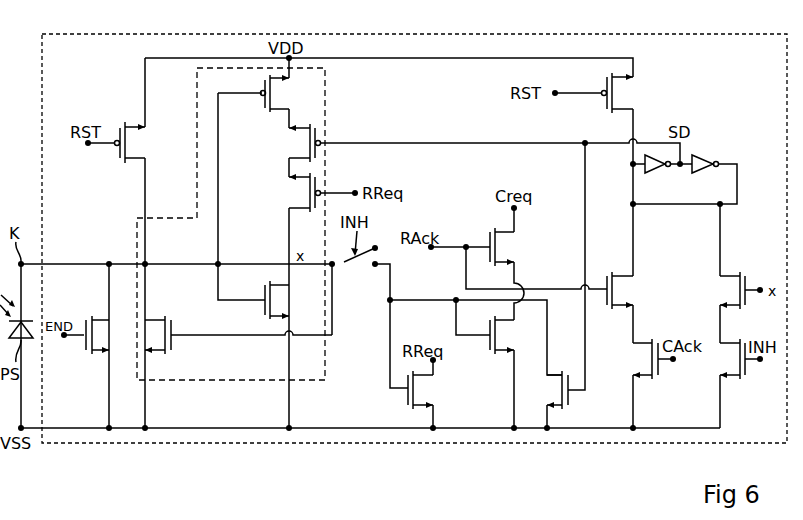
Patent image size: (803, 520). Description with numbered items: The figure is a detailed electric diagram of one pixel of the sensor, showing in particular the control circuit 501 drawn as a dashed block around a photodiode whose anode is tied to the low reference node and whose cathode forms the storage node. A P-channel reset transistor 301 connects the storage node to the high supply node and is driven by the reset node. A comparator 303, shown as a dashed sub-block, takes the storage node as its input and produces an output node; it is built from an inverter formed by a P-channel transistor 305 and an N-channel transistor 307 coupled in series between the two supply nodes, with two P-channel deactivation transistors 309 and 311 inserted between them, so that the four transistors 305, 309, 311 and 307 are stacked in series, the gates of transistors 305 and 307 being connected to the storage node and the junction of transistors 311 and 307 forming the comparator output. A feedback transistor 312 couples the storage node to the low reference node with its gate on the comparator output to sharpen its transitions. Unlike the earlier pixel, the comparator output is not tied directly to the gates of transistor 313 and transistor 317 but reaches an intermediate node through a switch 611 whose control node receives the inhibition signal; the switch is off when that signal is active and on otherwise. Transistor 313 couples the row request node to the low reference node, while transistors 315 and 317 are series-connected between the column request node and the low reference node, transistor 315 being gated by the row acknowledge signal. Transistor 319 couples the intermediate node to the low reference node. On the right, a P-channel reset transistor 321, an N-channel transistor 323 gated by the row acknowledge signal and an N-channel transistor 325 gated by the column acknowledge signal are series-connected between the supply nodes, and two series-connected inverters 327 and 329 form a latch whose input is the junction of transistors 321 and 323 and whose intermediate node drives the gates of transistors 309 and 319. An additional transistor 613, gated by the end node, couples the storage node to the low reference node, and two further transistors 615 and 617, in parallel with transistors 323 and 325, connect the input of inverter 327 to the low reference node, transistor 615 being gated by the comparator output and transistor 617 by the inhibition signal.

The control circuit 501 is at (162, 34).
The reset transistor 301 is at (130, 150).
The comparator 303 is at (326, 100).
The transistor 305 is at (265, 100).
The transistor 307 is at (263, 305).
The deactivation transistor 309 is at (308, 152).
The deactivation transistor 311 is at (308, 196).
The feedback transistor 312 is at (150, 318).
The transistor 313 is at (420, 385).
The transistor 315 is at (500, 240).
The transistor 317 is at (500, 330).
The transistor 319 is at (561, 382).
The reset transistor 321 is at (618, 97).
The transistor 323 is at (613, 281).
The transistor 325 is at (640, 341).
The inverter 327 is at (659, 174).
The inverter 329 is at (706, 174).
The switch 611 is at (364, 273).
The transistor 613 is at (95, 326).
The transistor 615 is at (727, 282).
The transistor 617 is at (730, 349).